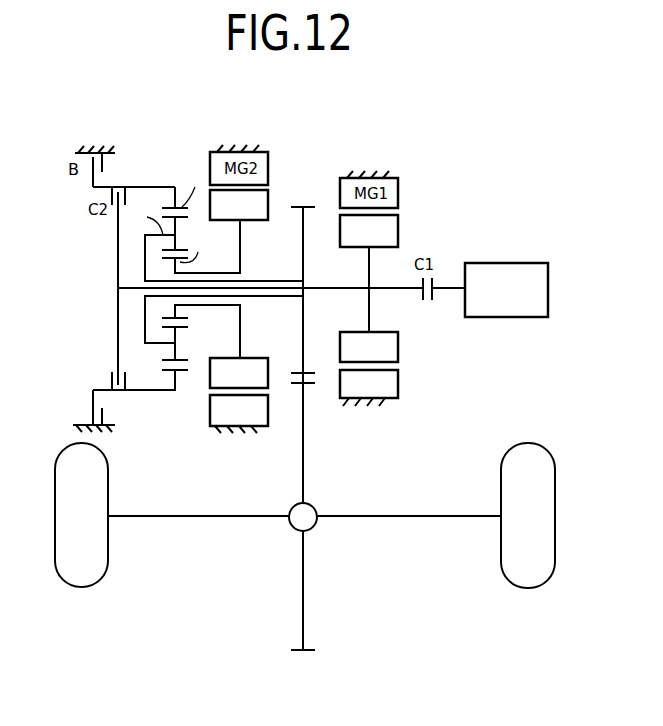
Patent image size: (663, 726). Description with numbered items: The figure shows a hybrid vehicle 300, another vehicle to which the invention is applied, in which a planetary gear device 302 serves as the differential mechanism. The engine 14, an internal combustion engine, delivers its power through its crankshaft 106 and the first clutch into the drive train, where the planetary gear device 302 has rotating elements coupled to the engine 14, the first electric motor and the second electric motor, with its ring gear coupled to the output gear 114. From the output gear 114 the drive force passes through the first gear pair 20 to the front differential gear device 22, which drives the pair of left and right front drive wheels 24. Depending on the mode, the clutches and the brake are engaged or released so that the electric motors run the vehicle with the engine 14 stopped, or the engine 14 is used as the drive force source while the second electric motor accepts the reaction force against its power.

The hybrid vehicle 300 is at (474, 112).
The planetary gear device 302 is at (177, 170).
The output gear 114 is at (303, 205).
The engine 14 is at (515, 273).
The crankshaft 106 is at (445, 292).
The first gear pair 20 is at (323, 384).
The front differential gear device 22 is at (296, 522).
The front drive wheels 24 is at (79, 572).